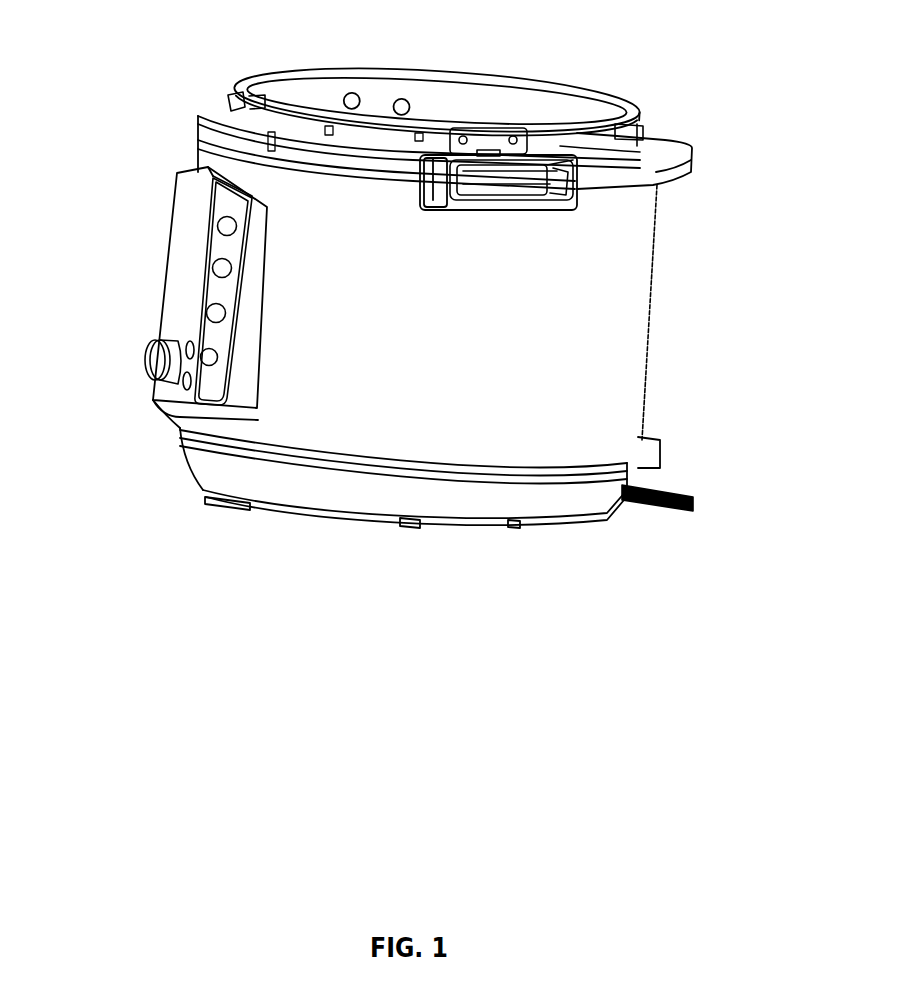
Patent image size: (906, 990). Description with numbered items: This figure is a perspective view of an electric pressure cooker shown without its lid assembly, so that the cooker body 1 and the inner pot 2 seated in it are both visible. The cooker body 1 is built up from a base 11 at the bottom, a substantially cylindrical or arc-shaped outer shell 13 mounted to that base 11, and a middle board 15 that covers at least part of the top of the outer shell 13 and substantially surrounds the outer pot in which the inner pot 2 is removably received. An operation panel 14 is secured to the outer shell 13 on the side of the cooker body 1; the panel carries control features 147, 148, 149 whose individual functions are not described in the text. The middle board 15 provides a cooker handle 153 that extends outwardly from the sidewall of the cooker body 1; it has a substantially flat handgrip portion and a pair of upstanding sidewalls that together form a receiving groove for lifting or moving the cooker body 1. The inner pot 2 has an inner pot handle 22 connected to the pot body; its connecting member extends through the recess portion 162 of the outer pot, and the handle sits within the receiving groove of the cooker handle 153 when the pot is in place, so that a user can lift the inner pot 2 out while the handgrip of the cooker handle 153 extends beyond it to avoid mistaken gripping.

The cooker body 1 is at (521, 427).
The base 11 is at (467, 498).
The outer shell 13 is at (575, 363).
The operation panel 14 is at (172, 213).
The button 147 is at (212, 357).
The knob 148 is at (175, 318).
The button strip 149 is at (225, 293).
The middle board 15 is at (485, 197).
The cooker handle 153 is at (523, 183).
The recess portion 162 is at (227, 103).
The inner pot 2 is at (472, 98).
The inner pot handle 22 is at (530, 185).